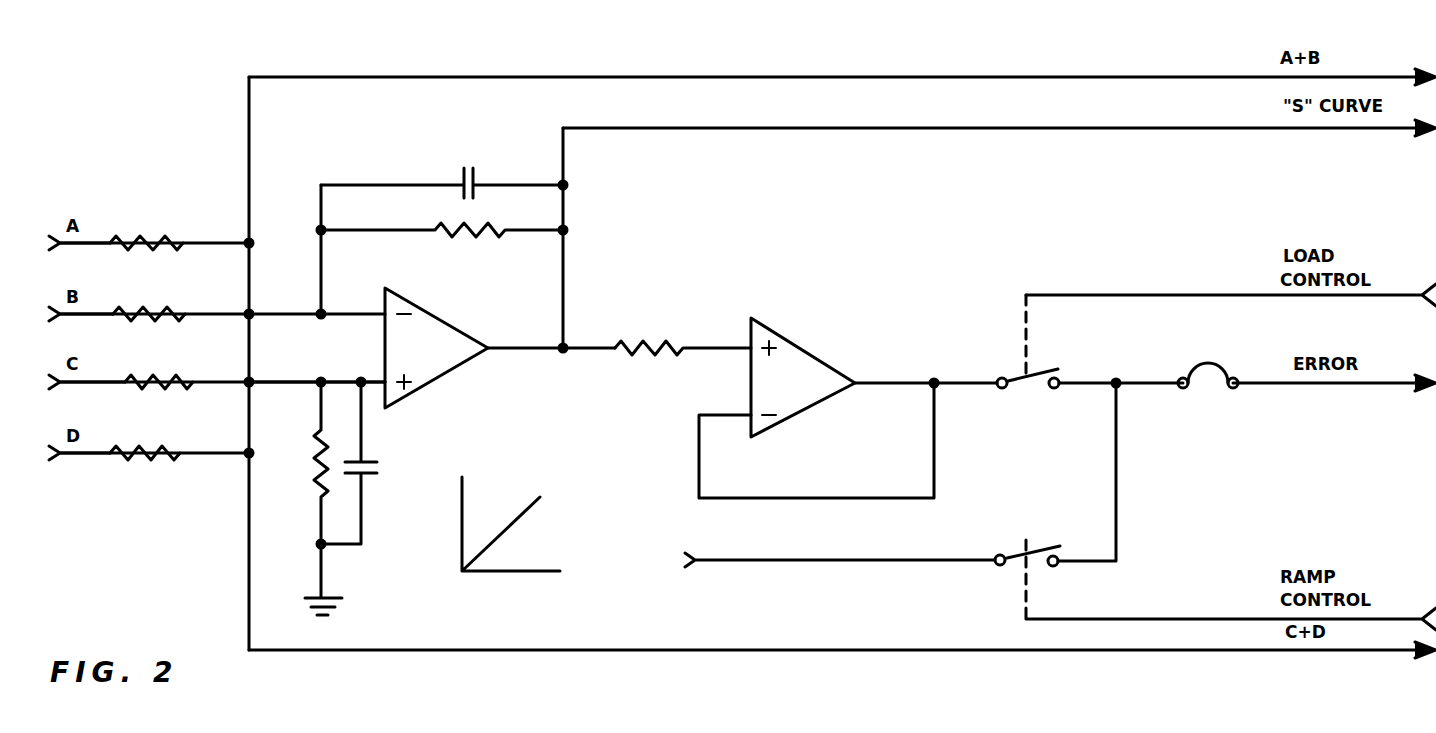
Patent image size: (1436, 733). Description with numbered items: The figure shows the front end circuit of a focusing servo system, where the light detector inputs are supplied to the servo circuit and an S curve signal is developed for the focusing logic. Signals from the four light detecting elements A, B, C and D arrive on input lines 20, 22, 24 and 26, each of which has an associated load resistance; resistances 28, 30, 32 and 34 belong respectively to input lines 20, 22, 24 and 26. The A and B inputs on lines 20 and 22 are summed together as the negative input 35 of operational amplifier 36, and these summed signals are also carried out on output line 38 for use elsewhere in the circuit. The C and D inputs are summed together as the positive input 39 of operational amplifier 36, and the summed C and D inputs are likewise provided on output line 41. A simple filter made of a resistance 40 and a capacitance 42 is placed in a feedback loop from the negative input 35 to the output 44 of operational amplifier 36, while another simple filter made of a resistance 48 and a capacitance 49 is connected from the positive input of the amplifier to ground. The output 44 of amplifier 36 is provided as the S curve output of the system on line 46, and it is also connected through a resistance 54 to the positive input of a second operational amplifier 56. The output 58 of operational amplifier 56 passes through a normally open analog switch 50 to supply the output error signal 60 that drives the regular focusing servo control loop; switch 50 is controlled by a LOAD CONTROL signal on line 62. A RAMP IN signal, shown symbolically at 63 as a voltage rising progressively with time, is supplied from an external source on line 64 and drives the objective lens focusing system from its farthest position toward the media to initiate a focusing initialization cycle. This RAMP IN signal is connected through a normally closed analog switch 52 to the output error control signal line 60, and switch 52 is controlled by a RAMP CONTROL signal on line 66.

The input line 20 is at (104, 242).
The input line 22 is at (107, 313).
The input line 24 is at (103, 381).
The input line 26 is at (104, 452).
The load resistance 28 is at (178, 241).
The load resistance 30 is at (160, 313).
The load resistance 32 is at (158, 381).
The load resistance 34 is at (165, 451).
The negative input 35 is at (350, 313).
The operational amplifier 36 is at (445, 376).
The output line 38 is at (1158, 77).
The positive input 39 is at (292, 381).
The resistance 40 is at (478, 232).
The output line 41 is at (1190, 652).
The capacitance 42 is at (471, 166).
The output 44 is at (533, 350).
The S curve output line 46 is at (1143, 128).
The resistance 48 is at (317, 478).
The capacitance 49 is at (380, 466).
The normally open analog switch 50 is at (1040, 372).
The normally closed analog switch 52 is at (1027, 540).
The resistance 54 is at (660, 340).
The operational amplifier 56 is at (800, 341).
The output 58 is at (895, 380).
The output error signal 60 is at (1387, 381).
The LOAD CONTROL signal line 62 is at (1160, 294).
The RAMP IN signal 63 is at (537, 530).
The RAMP IN signal line 64 is at (893, 562).
The RAMP CONTROL signal line 66 is at (1198, 617).